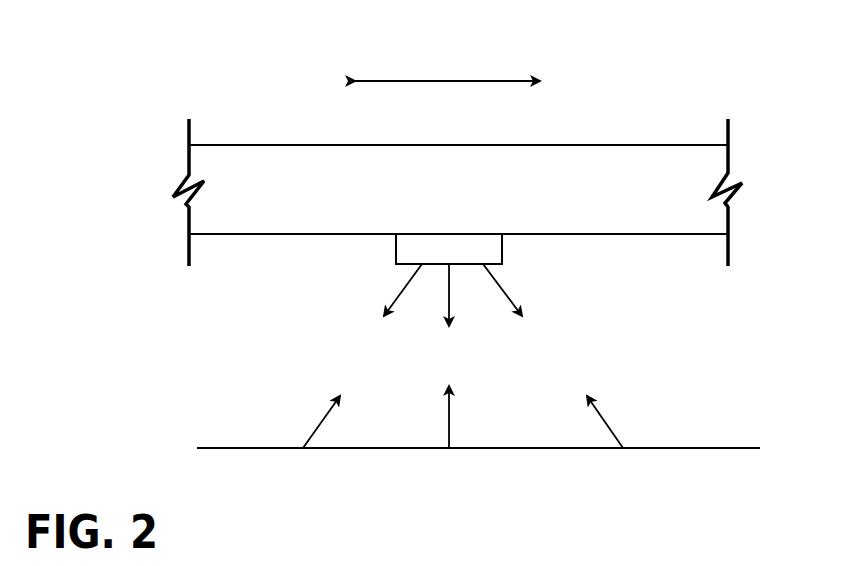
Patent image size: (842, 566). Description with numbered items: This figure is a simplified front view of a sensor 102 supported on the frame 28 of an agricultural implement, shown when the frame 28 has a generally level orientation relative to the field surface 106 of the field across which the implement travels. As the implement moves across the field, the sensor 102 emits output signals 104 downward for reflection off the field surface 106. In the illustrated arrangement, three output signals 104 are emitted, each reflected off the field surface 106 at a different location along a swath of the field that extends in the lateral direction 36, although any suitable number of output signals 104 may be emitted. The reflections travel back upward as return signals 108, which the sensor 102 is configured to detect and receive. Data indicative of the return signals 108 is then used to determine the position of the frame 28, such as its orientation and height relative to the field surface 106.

The frame 28 is at (660, 145).
The lateral direction 36 is at (490, 81).
The sensor 102 is at (502, 250).
The output signals 104 is at (398, 295).
The field surface 106 is at (718, 448).
The return signals 108 is at (325, 422).